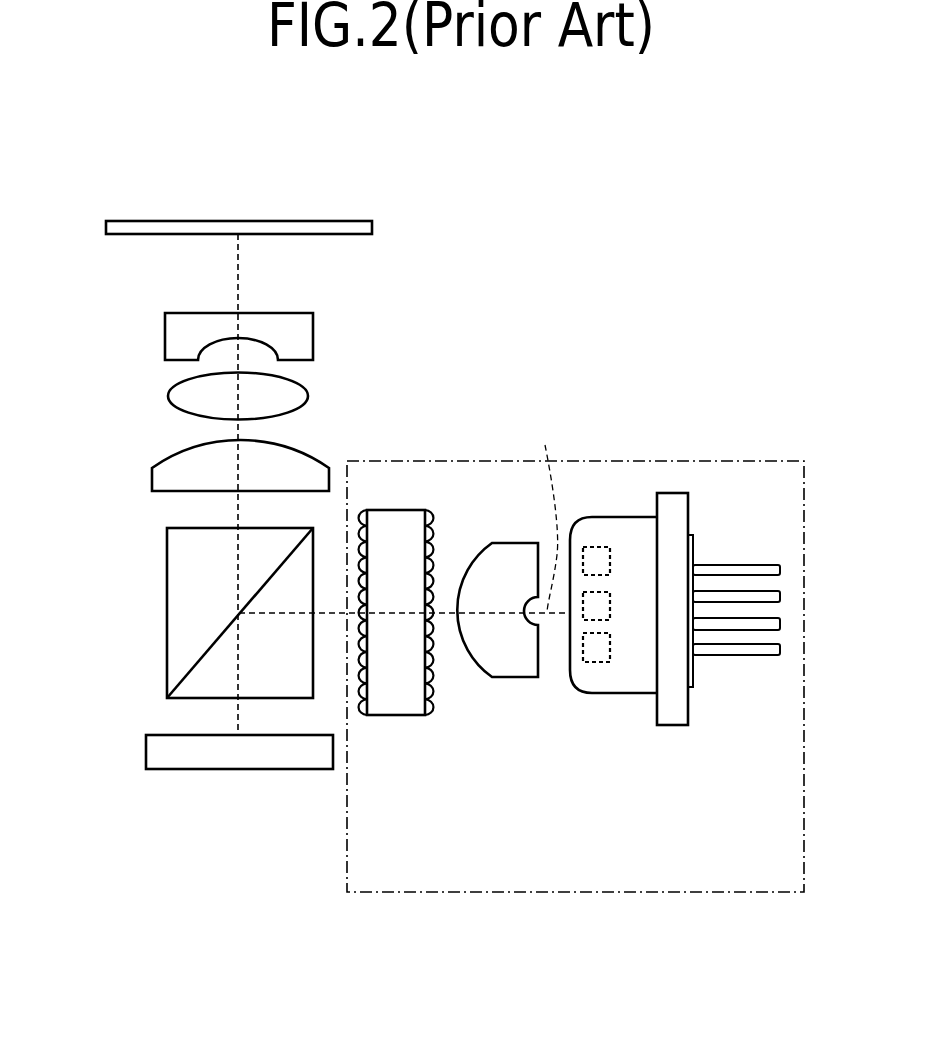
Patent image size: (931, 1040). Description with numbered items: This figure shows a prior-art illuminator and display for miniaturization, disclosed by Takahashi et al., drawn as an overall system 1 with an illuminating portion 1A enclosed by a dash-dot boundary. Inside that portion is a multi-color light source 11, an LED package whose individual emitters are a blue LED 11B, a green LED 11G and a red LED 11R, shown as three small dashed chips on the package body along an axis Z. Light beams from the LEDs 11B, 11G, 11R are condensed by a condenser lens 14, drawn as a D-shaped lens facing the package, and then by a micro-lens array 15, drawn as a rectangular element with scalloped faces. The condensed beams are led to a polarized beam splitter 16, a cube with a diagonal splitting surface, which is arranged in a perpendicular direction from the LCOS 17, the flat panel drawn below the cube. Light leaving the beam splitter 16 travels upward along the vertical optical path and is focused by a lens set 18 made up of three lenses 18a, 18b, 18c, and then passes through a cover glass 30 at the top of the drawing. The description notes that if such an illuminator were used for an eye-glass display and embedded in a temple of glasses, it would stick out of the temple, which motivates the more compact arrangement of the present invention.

The projector 1 is at (581, 227).
The light source device 1A is at (720, 460).
The light source 11 is at (673, 646).
The blue LED 11B is at (590, 547).
The green LED 11G is at (610, 600).
The red LED 11R is at (600, 662).
The condenser lens 14 is at (512, 678).
The micro-lens array 15 is at (393, 716).
The polarized beam splitter 16 is at (177, 596).
The LCOS 17 is at (241, 755).
The lens set 18 is at (307, 402).
The lens 18a is at (282, 452).
The lens 18b is at (303, 390).
The lens 18c is at (303, 337).
The cover glass 30 is at (238, 221).
The optical axis Z is at (547, 512).